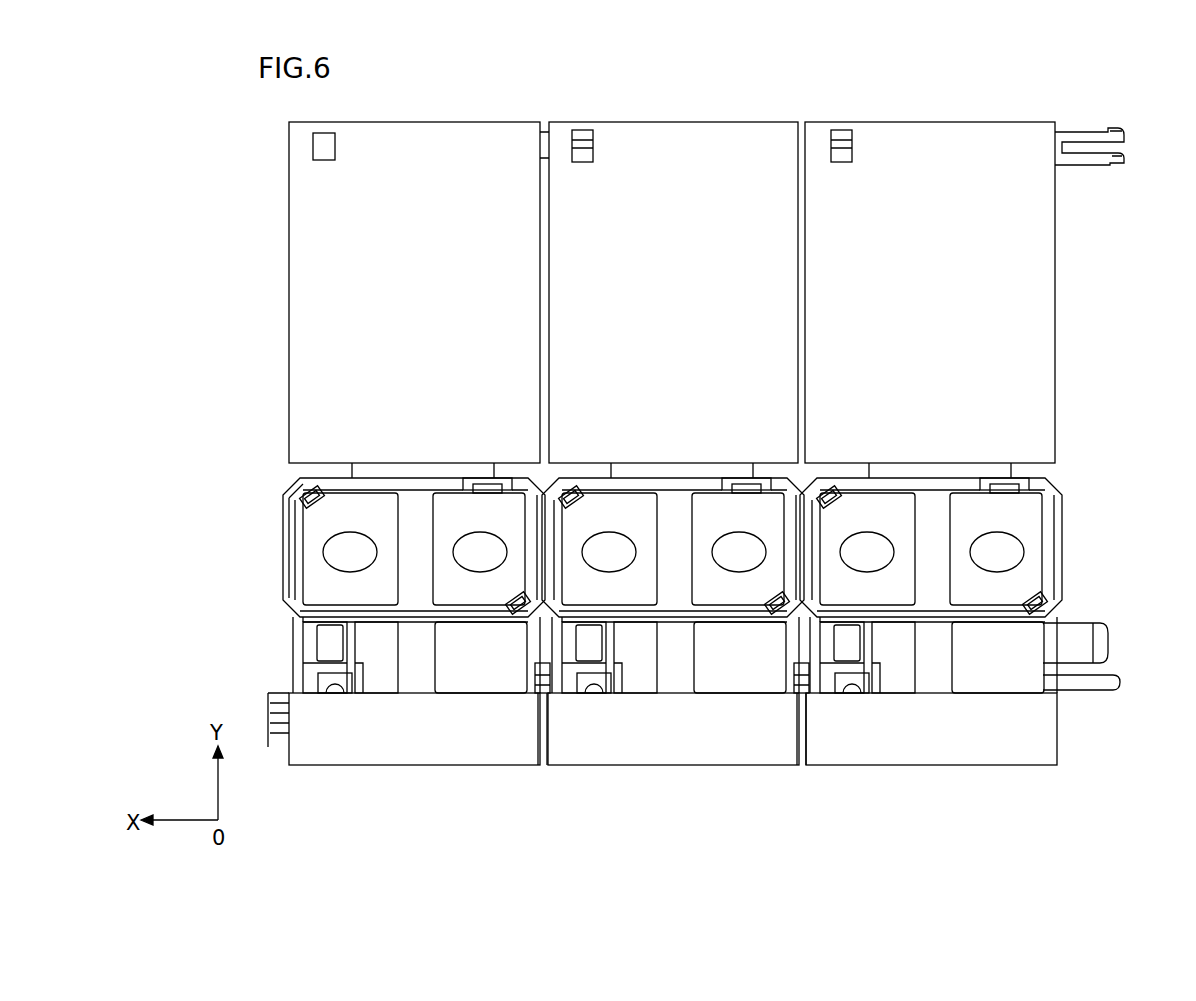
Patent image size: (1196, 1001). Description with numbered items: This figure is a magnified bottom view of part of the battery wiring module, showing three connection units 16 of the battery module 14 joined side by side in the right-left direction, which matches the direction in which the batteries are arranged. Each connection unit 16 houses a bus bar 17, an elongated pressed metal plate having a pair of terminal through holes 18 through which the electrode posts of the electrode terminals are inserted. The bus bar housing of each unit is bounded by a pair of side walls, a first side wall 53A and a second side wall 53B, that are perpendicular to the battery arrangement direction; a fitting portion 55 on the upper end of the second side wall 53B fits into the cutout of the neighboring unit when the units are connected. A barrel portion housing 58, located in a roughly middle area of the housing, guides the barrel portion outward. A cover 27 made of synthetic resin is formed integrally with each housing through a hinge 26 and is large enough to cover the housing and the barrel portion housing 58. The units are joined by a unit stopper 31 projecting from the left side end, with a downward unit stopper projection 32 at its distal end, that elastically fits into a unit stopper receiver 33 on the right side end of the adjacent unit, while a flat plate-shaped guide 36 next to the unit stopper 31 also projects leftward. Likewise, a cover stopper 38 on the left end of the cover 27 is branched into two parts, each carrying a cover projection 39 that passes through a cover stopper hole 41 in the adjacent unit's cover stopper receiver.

The battery module 14 is at (1040, 270).
The connection unit 16 is at (414, 745).
The bus bar 17 is at (1013, 510).
The terminal through hole 18 is at (878, 540).
The hinge 26 is at (392, 470).
The cover 27 is at (418, 148).
The unit stopper 31 is at (1075, 632).
The unit stopper projection 32 is at (585, 652).
The unit stopper receiver 33 is at (305, 638).
The guide 36 is at (538, 682).
The cover stopper 38 is at (1087, 137).
The cover projection 39 is at (1118, 128).
The cover stopper hole 41 is at (338, 683).
The first side wall 53A is at (1058, 528).
The second side wall 53B is at (295, 575).
The fitting portion 55 is at (285, 517).
The barrel portion housing 58 is at (405, 655).